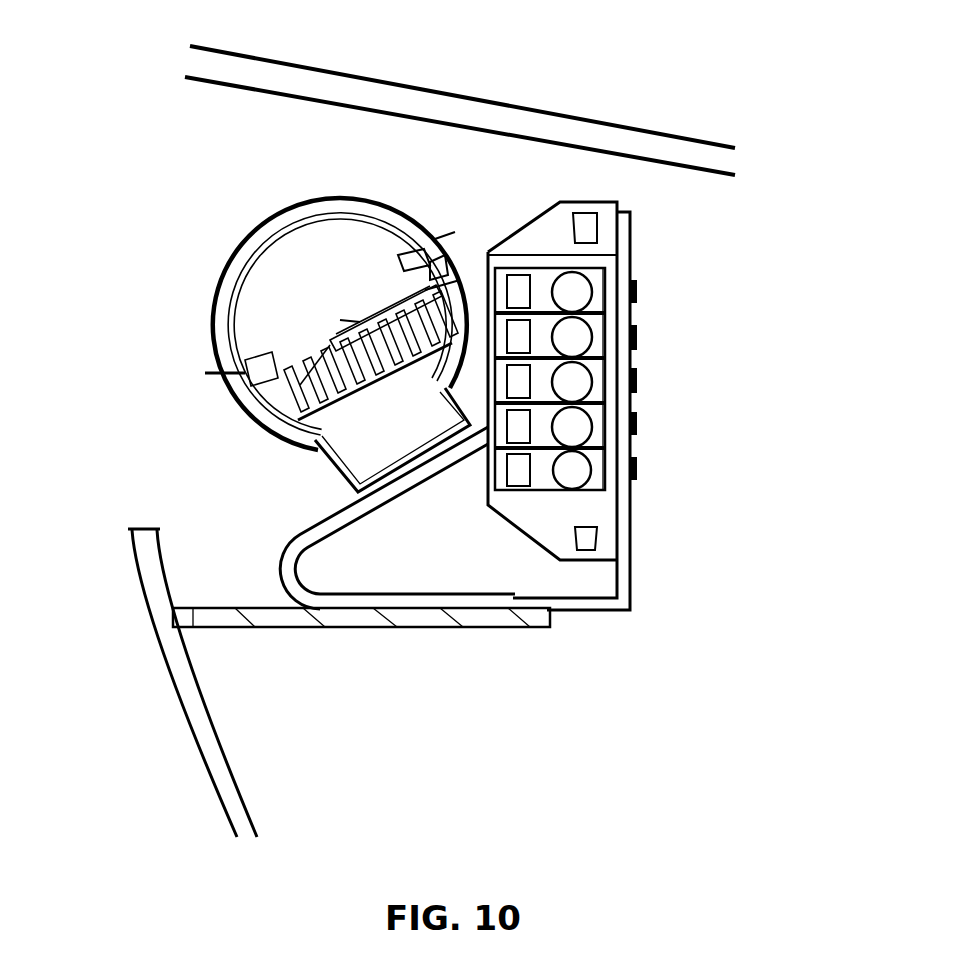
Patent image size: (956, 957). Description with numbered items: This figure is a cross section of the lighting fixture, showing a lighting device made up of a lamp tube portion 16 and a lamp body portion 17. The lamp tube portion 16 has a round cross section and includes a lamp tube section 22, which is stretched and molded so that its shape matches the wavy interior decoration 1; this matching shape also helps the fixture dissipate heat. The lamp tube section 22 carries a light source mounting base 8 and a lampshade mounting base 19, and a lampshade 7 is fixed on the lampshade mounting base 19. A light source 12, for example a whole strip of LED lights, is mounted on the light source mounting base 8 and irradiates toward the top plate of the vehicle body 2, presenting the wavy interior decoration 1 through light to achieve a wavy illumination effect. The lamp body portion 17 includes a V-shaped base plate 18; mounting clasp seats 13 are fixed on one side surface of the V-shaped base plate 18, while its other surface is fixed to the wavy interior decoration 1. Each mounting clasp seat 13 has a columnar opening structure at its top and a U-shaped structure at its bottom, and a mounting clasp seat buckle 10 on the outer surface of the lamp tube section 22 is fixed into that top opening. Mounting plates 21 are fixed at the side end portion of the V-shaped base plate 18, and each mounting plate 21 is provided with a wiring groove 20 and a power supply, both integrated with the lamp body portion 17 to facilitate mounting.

The wavy interior decoration 1 is at (340, 620).
The vehicle body 2 is at (525, 118).
The lampshade 7 is at (280, 218).
The light source mounting base 8 is at (330, 342).
The mounting clasp seat buckle 10 is at (317, 400).
The light source 12 is at (345, 322).
The mounting clasp seat 13 is at (337, 452).
The lamp tube portion 16 is at (229, 190).
The lamp body portion 17 is at (665, 481).
The V-shaped base plate 18 is at (300, 545).
The lampshade mounting base 19 is at (438, 240).
The wiring groove 20 is at (588, 375).
The mounting plate 21 is at (633, 522).
The lamp tube section 22 is at (383, 390).